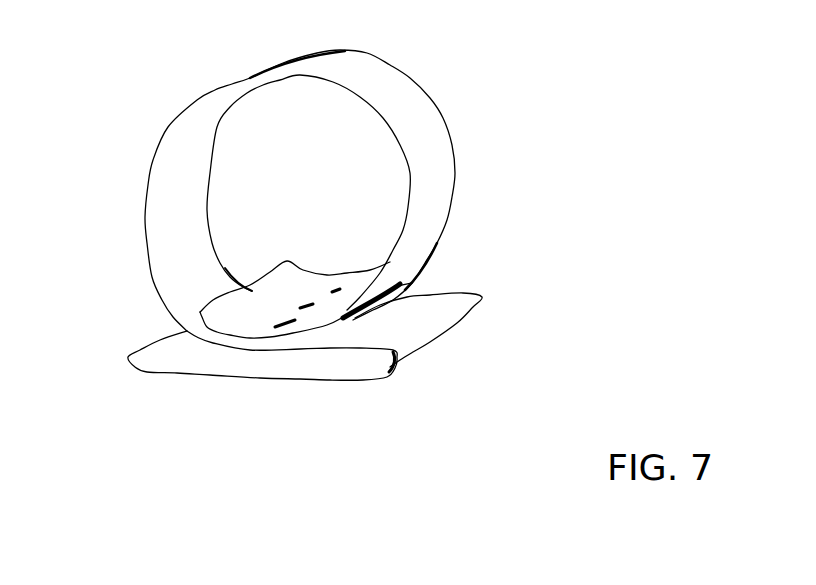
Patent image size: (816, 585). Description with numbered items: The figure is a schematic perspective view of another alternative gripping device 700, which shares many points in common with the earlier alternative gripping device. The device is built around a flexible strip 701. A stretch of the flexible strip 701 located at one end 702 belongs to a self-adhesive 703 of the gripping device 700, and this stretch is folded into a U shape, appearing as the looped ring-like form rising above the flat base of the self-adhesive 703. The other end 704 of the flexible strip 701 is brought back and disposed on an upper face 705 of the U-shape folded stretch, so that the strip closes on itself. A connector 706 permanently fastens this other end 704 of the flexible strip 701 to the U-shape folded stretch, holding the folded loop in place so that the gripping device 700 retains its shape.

The other alternative gripping device 700 is at (123, 33).
The flexible strip 701 is at (397, 83).
The one end 702 is at (148, 372).
The self-adhesive 703 is at (437, 360).
The other end 704 is at (297, 262).
The upper face 705 is at (417, 302).
The connector 706 is at (318, 302).